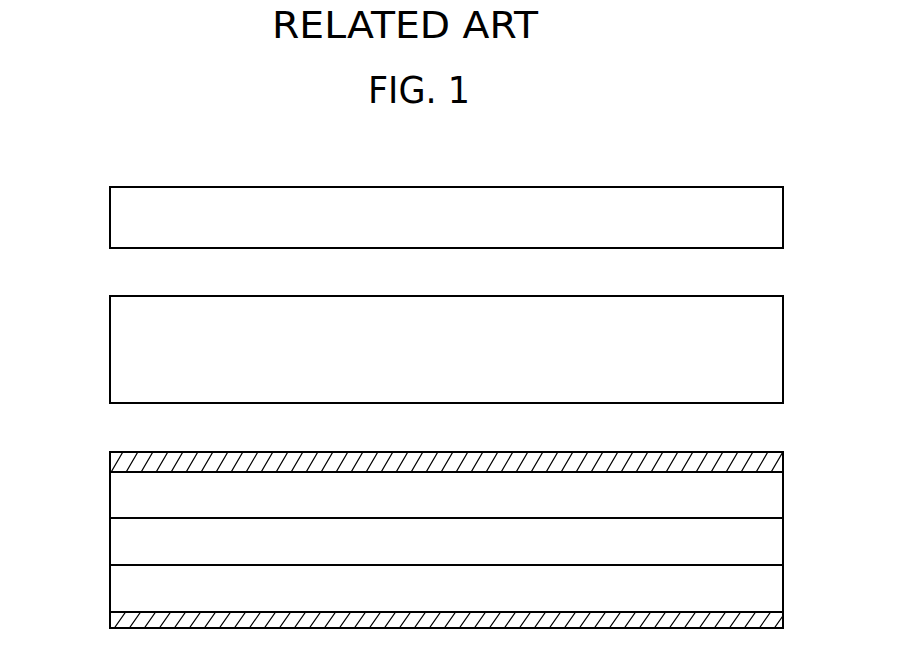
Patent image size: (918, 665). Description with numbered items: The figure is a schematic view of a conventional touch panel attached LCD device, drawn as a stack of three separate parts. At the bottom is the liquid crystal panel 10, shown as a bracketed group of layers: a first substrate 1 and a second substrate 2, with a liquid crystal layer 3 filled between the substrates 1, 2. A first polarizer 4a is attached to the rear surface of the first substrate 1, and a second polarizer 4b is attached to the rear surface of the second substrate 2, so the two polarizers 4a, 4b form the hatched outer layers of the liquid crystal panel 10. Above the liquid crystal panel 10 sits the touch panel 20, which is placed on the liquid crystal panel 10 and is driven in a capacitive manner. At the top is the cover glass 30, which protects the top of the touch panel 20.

The cover glass 30 is at (125, 221).
The touch panel 20 is at (125, 354).
The liquid crystal panel 10 is at (803, 453).
The second polarizer 4b is at (125, 466).
The second substrate 2 is at (125, 501).
The liquid crystal layer 3 is at (125, 546).
The first substrate 1 is at (125, 591).
The first polarizer 4a is at (125, 623).